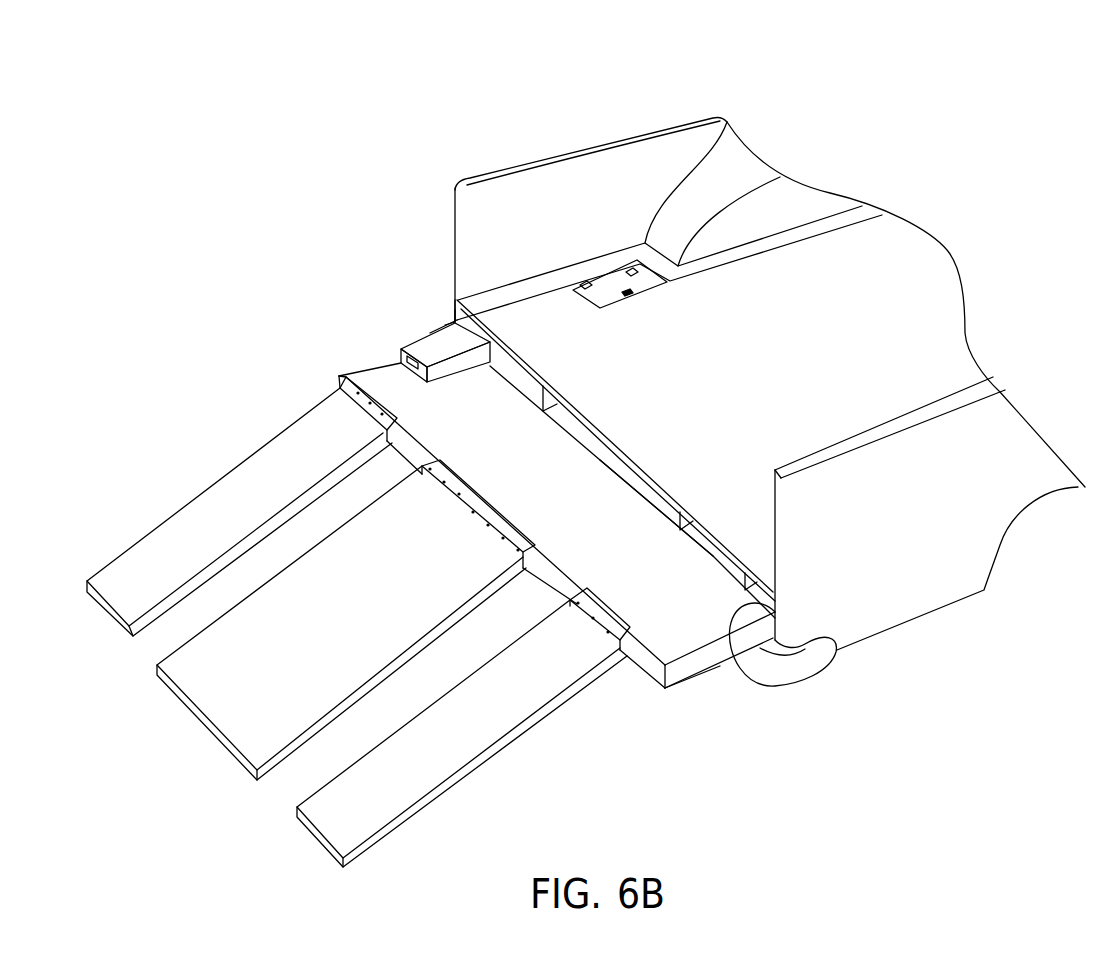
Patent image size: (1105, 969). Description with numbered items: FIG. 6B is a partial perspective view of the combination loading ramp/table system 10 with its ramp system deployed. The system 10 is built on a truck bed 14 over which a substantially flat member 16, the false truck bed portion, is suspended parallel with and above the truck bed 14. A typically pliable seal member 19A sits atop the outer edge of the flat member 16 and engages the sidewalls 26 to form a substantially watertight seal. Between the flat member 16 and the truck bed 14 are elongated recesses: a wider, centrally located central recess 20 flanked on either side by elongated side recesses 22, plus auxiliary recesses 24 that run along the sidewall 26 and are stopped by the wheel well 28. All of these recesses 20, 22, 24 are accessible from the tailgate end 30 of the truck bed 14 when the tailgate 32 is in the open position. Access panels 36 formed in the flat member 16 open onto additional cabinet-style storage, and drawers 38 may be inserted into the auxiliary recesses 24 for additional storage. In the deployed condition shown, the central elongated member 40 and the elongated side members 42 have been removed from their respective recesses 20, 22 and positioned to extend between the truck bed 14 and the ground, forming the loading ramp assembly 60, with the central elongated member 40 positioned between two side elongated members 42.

The combination loading ramp/table system 10 is at (191, 213).
The truck bed 14 is at (446, 320).
The substantially flat member 16 is at (912, 313).
The seal member 19A is at (470, 297).
The central recess 20 is at (612, 462).
The elongated side recesses 22 is at (512, 373).
The auxiliary recesses 24 is at (525, 352).
The sidewall 26 is at (918, 588).
The wheel well 28 is at (727, 183).
The tailgate end 30 is at (741, 700).
The tailgate 32 is at (707, 640).
The access panels 36 is at (610, 273).
The drawers 38 is at (440, 330).
The central elongated member 40 is at (262, 757).
The elongated side members 42 is at (110, 590).
The loading ramp assembly 60 is at (125, 462).